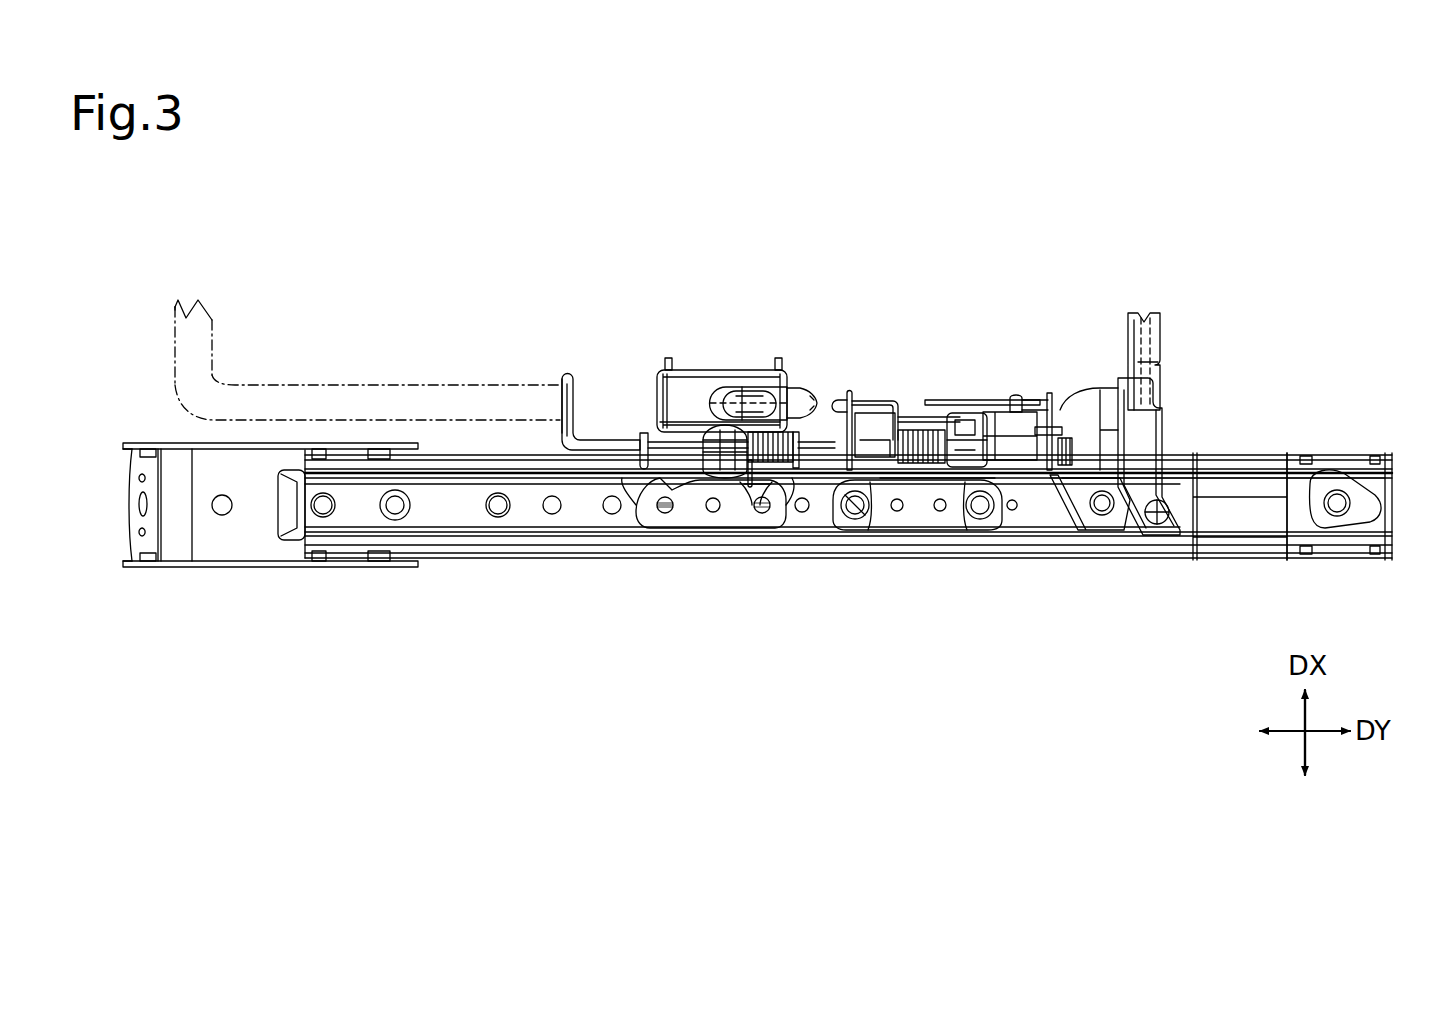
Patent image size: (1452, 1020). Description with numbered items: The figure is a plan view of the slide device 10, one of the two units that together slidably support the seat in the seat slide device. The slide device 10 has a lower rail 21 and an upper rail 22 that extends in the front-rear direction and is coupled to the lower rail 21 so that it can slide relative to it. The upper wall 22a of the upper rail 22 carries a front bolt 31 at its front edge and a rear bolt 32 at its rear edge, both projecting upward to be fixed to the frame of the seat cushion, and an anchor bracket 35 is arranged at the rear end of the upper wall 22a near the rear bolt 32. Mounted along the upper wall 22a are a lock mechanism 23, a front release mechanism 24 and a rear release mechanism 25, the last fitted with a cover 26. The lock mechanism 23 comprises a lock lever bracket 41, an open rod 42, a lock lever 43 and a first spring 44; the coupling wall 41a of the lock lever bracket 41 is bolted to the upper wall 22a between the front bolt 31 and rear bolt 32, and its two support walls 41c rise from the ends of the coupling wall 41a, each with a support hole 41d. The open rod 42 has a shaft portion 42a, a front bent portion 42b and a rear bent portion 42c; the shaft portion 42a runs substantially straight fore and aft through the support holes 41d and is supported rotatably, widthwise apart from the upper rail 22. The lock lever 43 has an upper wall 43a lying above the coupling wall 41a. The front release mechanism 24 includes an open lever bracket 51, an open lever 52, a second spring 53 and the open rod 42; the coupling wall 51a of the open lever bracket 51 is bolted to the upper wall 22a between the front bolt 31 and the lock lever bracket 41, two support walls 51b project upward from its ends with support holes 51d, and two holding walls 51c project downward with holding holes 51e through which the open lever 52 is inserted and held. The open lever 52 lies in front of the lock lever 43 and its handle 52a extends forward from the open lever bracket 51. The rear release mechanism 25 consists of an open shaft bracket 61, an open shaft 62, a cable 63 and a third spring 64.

The slide device 10 is at (1290, 294).
The lower rail 21 is at (433, 570).
The upper rail 22 is at (438, 476).
The upper wall 22a is at (525, 522).
The lock mechanism 23 is at (968, 360).
The front release mechanism 24 is at (718, 330).
The rear release mechanism 25 is at (1130, 312).
The cover 26 is at (1150, 432).
The front bolt 31 is at (488, 498).
The rear bolt 32 is at (1352, 505).
The anchor bracket 35 is at (1350, 455).
The lock lever bracket 41 is at (922, 520).
The coupling wall 41a is at (890, 522).
The support wall 41c is at (856, 462).
The support hole 41d is at (850, 508).
The open rod 42 is at (582, 436).
The shaft portion 42a is at (630, 446).
The front bent portion 42b is at (566, 396).
The rear bent portion 42c is at (1015, 396).
The lock lever 43 is at (952, 424).
The upper wall 43a is at (988, 414).
The first spring 44 is at (920, 430).
The open lever bracket 51 is at (722, 528).
The coupling wall 51a is at (678, 518).
The support wall 51b is at (646, 492).
The holding wall 51c is at (668, 358).
The support hole 51d is at (642, 466).
The holding hole 51e is at (712, 394).
The open lever 52 is at (268, 358).
The handle 52a is at (220, 338).
The second spring 53 is at (748, 490).
The open shaft bracket 61 is at (1108, 530).
The open shaft 62 is at (1090, 402).
The cable 63 is at (1165, 378).
The third spring 64 is at (1050, 404).